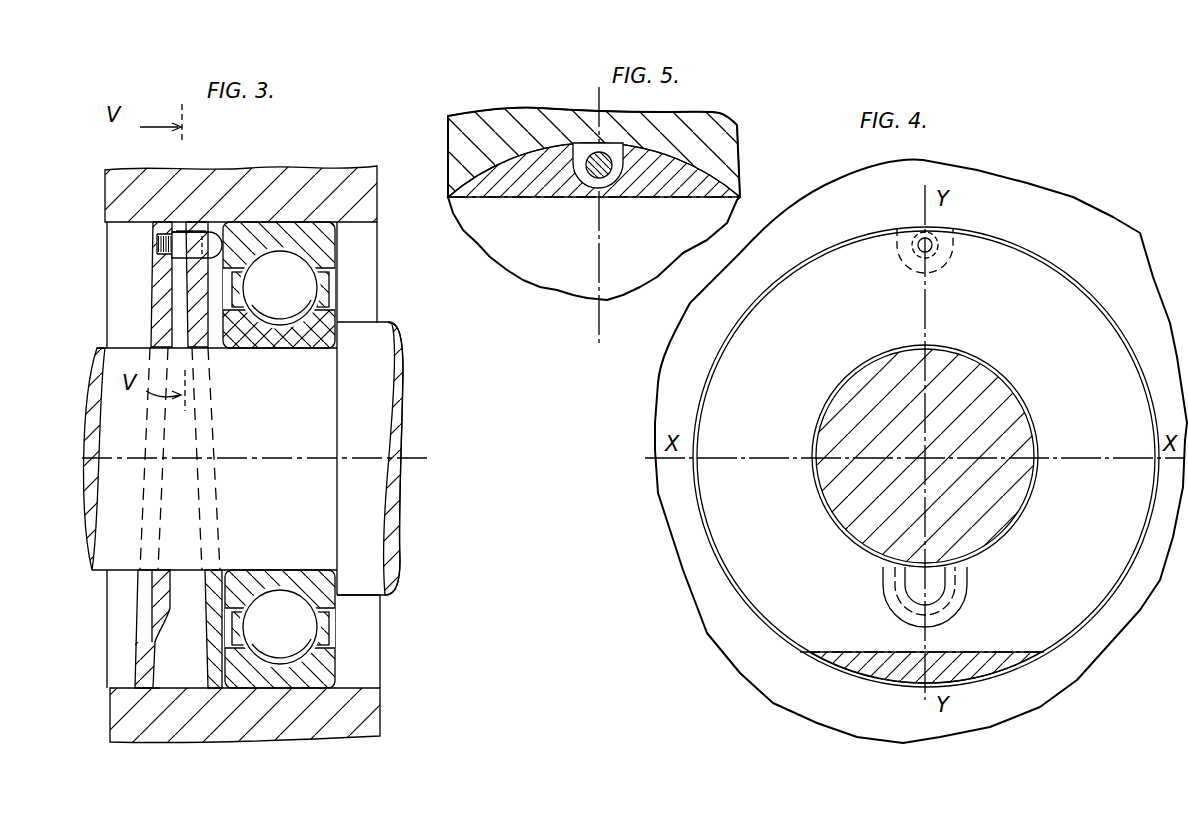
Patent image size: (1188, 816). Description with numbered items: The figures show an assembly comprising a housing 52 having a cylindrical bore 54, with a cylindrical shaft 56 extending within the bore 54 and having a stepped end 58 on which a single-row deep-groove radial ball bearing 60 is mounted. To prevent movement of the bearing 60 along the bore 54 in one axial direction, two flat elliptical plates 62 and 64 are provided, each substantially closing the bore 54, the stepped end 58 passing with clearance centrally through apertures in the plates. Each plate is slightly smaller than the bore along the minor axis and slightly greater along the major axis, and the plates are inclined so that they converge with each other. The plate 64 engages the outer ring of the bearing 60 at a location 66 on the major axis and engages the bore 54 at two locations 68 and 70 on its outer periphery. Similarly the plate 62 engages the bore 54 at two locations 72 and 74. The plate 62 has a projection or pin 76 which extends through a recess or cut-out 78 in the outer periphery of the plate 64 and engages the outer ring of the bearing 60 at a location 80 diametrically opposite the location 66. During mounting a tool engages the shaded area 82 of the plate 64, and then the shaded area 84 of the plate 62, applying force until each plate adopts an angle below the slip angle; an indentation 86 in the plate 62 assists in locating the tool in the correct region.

In FIG. 3, the housing 52 is at (325, 172).
In FIG. 3, the cylindrical bore 54 is at (125, 688).
In FIG. 3, the cylindrical shaft 56 is at (392, 400).
In FIG. 3, the stepped end 58 is at (325, 368).
In FIG. 4, the stepped end 58 is at (990, 386).
In FIG. 3, the single-row deep-groove radial ball bearing 60 is at (352, 244).
In FIG. 3, the flat elliptical plate 62 is at (160, 262).
In FIG. 4, the flat elliptical plate 62 is at (1058, 281).
In FIG. 3, the flat elliptical plate 64 is at (200, 302).
In FIG. 3, the location 66 is at (230, 675).
In FIG. 3, the location of engagement 68 is at (200, 232).
In FIG. 3, the location of engagement 70 is at (207, 676).
In FIG. 3, the location of engagement 72 is at (160, 240).
In FIG. 3, the location of engagement 74 is at (153, 670).
In FIG. 3, the pin 76 is at (214, 240).
In FIG. 5, the pin 76 is at (605, 182).
In FIG. 3, the cut-out 78 is at (206, 229).
In FIG. 4, the cut-out 78 is at (945, 262).
In FIG. 5, the cut-out 78 is at (585, 180).
In FIG. 3, the location 80 is at (240, 248).
In FIG. 5, the shaded area 82 is at (495, 200).
In FIG. 4, the shaded area 84 is at (848, 650).
In FIG. 3, the indentation 86 is at (140, 595).
In FIG. 4, the indentation 86 is at (950, 595).